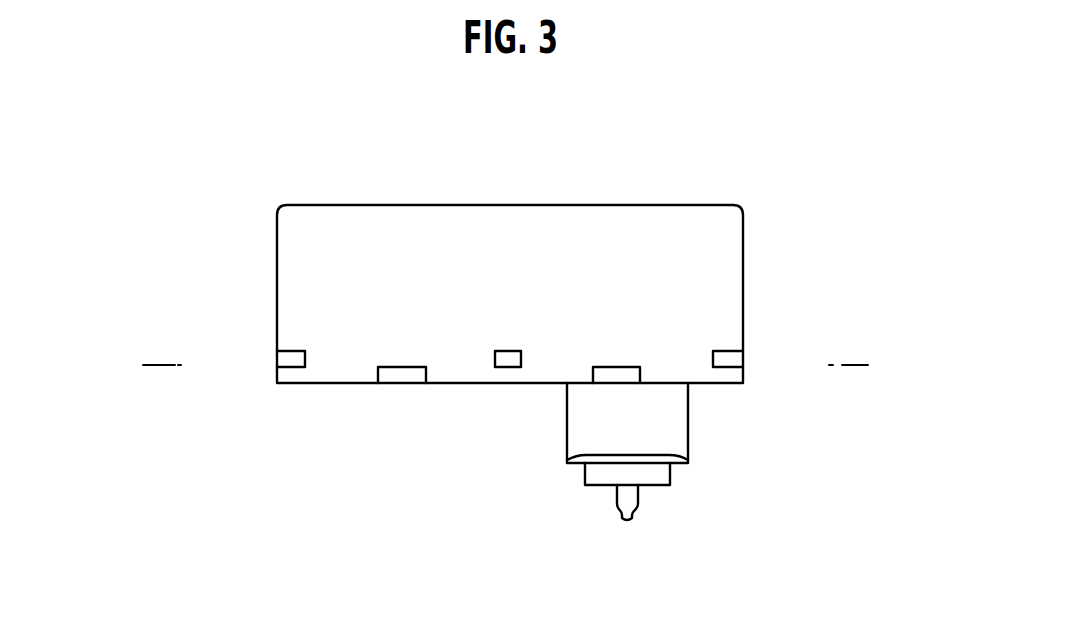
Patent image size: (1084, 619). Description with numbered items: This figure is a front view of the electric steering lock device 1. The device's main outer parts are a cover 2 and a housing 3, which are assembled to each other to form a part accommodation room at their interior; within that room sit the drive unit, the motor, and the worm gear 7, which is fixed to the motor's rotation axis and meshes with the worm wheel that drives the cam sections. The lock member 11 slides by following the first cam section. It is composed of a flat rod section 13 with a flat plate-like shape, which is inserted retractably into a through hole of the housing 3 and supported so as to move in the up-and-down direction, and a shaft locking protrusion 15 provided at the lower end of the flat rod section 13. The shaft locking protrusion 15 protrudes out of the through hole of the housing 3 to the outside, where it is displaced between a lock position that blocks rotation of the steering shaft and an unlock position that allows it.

The electric steering lock device 1 is at (542, 345).
The cover 2 is at (730, 260).
The housing 3 is at (403, 375).
The worm gear 7 is at (159, 352).
The lock member 11 is at (634, 495).
The flat rod section 13 is at (615, 493).
The shaft locking protrusion 15 is at (626, 520).